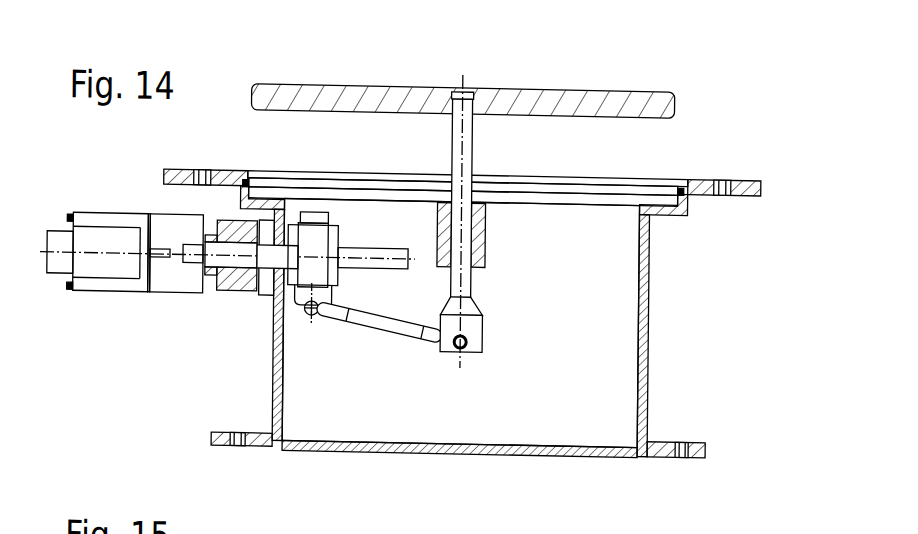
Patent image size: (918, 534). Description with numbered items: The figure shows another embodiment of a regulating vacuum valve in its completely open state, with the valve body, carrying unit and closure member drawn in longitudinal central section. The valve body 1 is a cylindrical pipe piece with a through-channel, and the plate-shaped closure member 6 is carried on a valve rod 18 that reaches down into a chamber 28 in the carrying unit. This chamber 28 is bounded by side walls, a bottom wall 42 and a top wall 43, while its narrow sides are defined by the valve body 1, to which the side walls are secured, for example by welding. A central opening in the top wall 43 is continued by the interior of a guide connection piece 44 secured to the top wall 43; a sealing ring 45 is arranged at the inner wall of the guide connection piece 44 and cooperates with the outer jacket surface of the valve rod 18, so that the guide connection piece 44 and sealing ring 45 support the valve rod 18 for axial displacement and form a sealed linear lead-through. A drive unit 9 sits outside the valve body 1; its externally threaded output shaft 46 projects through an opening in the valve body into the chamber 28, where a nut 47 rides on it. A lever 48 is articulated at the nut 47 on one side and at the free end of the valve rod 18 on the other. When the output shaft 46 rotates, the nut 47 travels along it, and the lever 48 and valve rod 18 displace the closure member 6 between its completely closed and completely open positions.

The valve body 1 is at (648, 396).
The closure member 6 is at (593, 99).
The drive unit 9 is at (110, 267).
The valve rod 18 is at (469, 150).
The chamber 28 is at (621, 350).
The bottom wall 42 is at (569, 450).
The top wall 43 is at (337, 199).
The guide connection piece 44 is at (482, 252).
The sealing ring 45 is at (491, 206).
The output shaft 46 is at (372, 264).
The nut 47 is at (313, 270).
The lever 48 is at (403, 331).